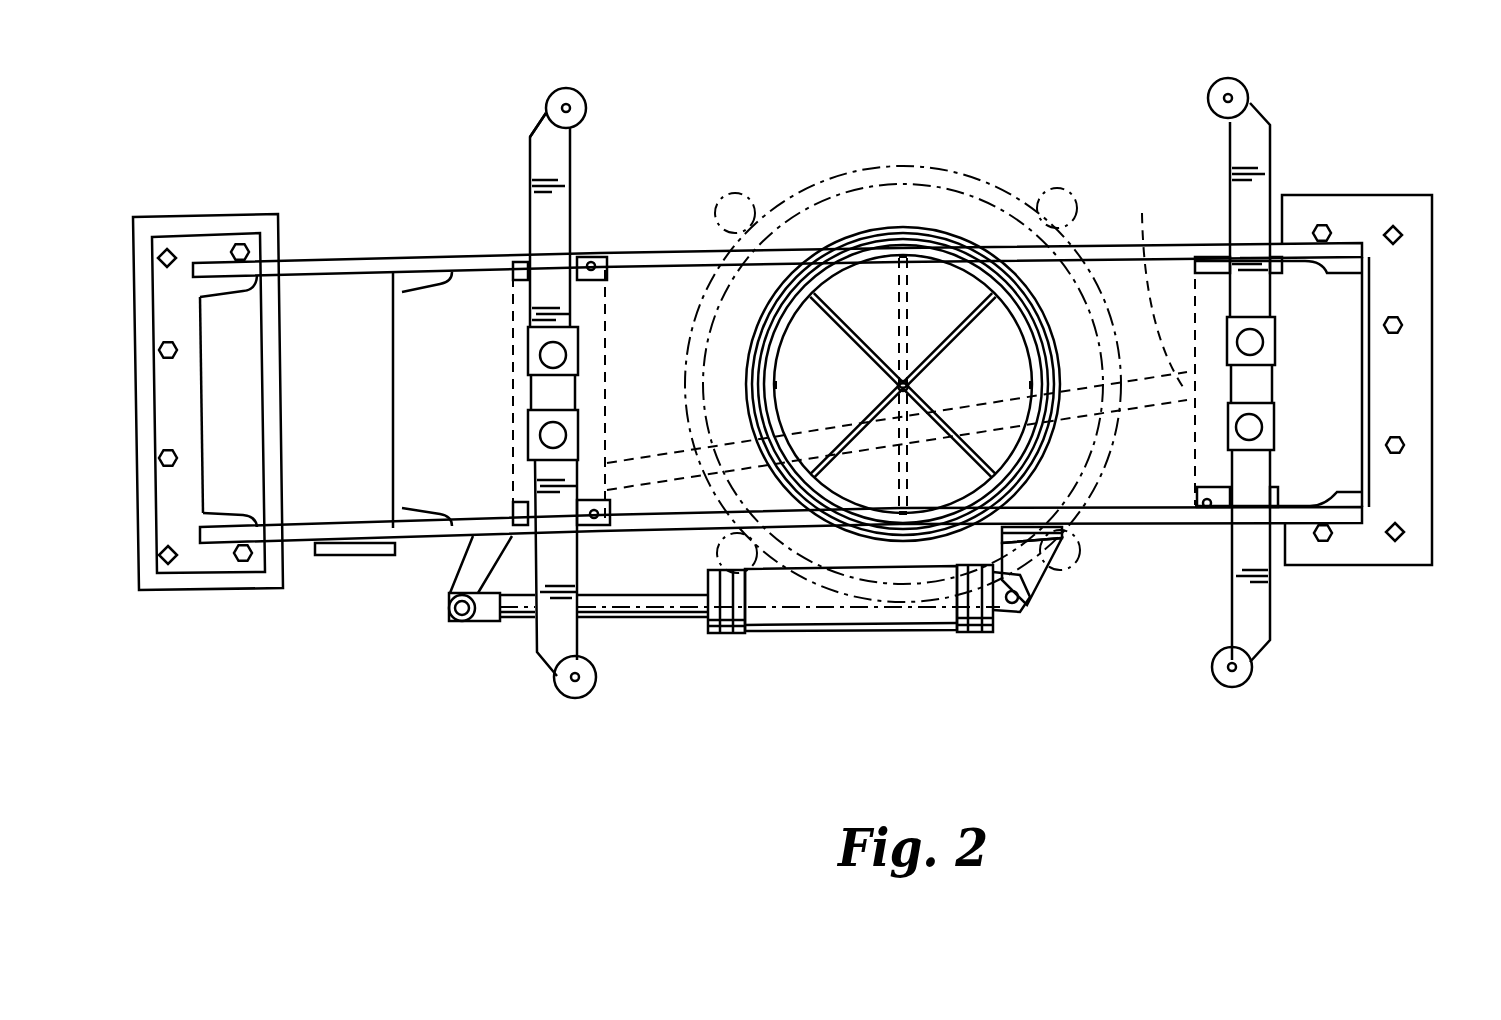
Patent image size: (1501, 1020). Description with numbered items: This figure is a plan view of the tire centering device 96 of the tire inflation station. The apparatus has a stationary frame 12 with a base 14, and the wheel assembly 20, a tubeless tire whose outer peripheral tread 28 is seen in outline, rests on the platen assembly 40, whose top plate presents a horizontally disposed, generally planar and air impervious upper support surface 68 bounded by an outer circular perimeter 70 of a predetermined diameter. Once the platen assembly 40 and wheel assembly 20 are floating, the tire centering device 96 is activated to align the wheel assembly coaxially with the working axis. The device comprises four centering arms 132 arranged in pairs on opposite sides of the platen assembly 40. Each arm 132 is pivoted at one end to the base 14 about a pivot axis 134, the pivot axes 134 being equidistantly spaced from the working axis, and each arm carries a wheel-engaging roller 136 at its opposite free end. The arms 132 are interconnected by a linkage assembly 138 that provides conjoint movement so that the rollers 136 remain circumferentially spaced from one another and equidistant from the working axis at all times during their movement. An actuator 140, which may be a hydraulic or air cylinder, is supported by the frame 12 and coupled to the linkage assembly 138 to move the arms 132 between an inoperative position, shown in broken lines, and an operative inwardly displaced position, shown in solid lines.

The stationary frame 12 is at (170, 596).
The base 14 is at (362, 268).
The wheel assembly 20 is at (861, 166).
The outer peripheral tread 28 is at (897, 166).
The platen assembly 40 is at (840, 236).
The upper support surface 68 is at (958, 253).
The outer circular perimeter 70 is at (921, 232).
The tire centering device 96 is at (540, 128).
The centering arms 132 is at (537, 167).
The pivot axes 134 is at (553, 430).
The roller 136 is at (736, 193).
The linkage assembly 138 is at (1156, 286).
The actuator 140 is at (818, 627).